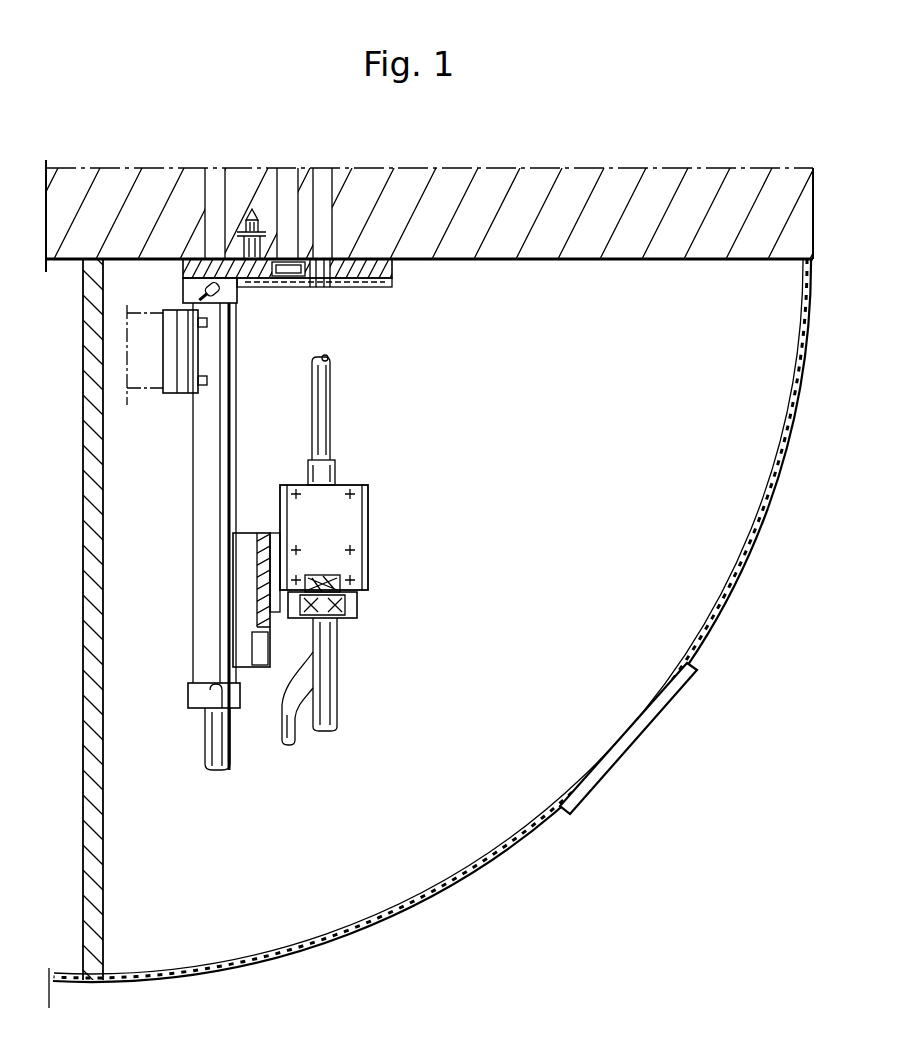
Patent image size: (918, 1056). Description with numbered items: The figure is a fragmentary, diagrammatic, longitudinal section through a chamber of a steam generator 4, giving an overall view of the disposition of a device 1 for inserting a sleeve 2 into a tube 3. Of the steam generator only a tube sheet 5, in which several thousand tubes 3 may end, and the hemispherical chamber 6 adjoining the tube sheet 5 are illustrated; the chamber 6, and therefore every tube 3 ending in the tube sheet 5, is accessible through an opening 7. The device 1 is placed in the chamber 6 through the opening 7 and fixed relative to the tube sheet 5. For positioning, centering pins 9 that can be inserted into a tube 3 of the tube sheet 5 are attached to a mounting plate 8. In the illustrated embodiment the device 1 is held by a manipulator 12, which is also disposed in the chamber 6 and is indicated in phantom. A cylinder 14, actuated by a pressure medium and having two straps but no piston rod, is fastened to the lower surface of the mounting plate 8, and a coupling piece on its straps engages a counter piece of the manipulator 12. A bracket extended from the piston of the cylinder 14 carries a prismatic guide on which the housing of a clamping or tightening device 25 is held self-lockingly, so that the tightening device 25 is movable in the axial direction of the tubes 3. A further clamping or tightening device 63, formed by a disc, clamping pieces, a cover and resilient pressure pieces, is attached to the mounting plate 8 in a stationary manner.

The device 1 is at (372, 425).
The sleeve 2 is at (325, 395).
The tube 3 is at (327, 178).
The steam generator 4 is at (793, 505).
The tube sheet 5 is at (613, 178).
The hemispherical chamber 6 is at (713, 630).
The opening 7 is at (648, 720).
The mounting plate 8 is at (193, 258).
The centering pin 9 is at (252, 211).
The manipulator 12 is at (143, 327).
The cylinder 14 is at (202, 633).
The clamping or tightening device 25 is at (374, 532).
The clamping or tightening device 63 is at (347, 296).